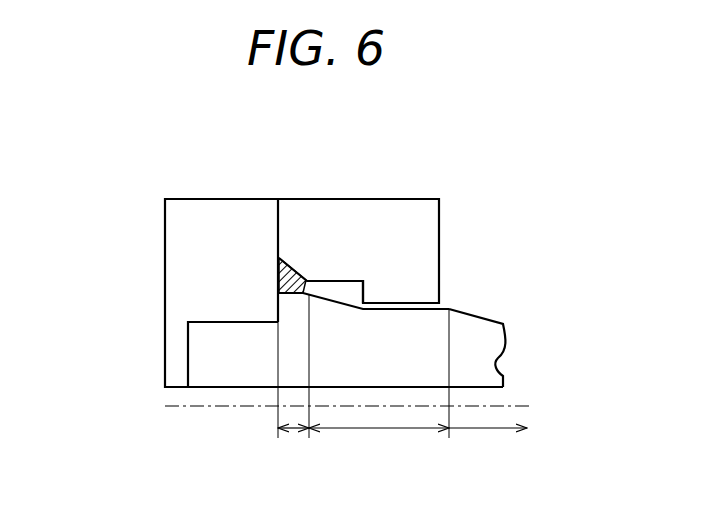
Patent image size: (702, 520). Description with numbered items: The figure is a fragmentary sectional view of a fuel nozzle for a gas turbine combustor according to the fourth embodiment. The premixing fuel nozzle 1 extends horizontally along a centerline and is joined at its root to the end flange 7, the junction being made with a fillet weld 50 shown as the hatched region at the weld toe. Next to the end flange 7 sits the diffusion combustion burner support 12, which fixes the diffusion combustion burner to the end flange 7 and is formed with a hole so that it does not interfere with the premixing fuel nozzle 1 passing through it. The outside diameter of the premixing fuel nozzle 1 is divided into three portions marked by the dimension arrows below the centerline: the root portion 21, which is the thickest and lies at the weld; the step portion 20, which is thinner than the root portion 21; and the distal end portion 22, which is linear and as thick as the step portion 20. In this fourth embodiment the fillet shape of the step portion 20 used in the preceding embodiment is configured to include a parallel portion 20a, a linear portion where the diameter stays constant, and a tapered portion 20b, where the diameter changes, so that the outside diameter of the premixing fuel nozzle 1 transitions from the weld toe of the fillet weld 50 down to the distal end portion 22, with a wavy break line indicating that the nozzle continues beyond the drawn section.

The end flange 7 is at (216, 226).
The diffusion combustion burner support 12 is at (360, 226).
The step portion 20 is at (380, 430).
The parallel portion 20a is at (390, 310).
The tapered portion 20b is at (327, 301).
The premixing fuel nozzle 1 is at (477, 332).
The fillet weld 50 is at (278, 282).
The root portion 21 is at (295, 430).
The distal end portion 22 is at (493, 430).